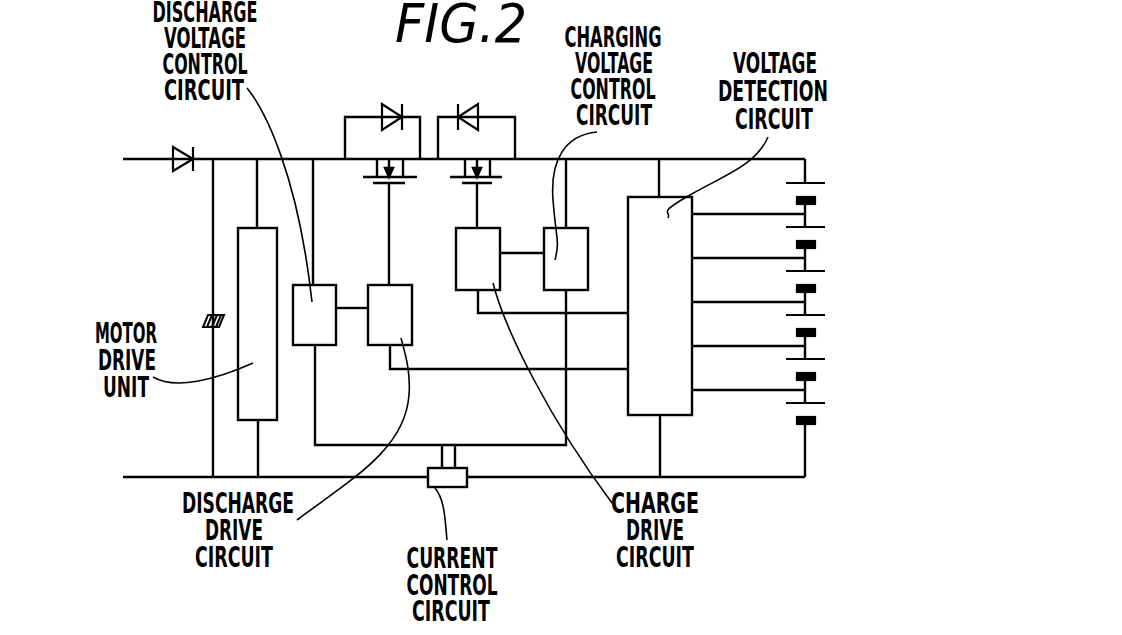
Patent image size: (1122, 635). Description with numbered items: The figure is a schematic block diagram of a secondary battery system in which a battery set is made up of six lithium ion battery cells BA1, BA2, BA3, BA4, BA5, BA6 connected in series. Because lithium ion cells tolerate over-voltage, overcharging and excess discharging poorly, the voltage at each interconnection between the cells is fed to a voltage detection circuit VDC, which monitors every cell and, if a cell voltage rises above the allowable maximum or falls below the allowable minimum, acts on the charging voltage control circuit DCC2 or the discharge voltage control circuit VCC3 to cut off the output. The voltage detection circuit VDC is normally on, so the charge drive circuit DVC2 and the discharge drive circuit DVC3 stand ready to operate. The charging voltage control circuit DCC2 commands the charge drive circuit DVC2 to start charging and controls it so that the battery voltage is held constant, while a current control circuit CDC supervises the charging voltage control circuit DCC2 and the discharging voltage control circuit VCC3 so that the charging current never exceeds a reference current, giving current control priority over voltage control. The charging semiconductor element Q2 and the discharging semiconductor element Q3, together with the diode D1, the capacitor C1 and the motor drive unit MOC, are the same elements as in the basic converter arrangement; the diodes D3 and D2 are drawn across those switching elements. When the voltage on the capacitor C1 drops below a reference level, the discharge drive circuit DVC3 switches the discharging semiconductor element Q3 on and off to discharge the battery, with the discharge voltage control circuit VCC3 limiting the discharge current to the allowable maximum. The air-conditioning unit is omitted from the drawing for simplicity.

The diode D1 is at (173, 165).
The capacitor C1 is at (202, 320).
The diode D3 is at (381, 109).
The diode D2 is at (480, 112).
The discharging semiconductor element Q3 is at (377, 182).
The charging semiconductor element Q2 is at (493, 184).
The discharge voltage control circuit VCC3 is at (308, 298).
The discharge drive circuit DVC3 is at (385, 349).
The charge drive circuit DVC2 is at (468, 292).
The charging voltage control circuit DCC2 is at (578, 224).
The voltage detection circuit VDC is at (628, 387).
The motor drive unit MOC is at (280, 413).
The current control circuit CDC is at (450, 480).
The battery cell BA1 is at (818, 199).
The battery cell BA2 is at (818, 243).
The battery cell BA3 is at (818, 287).
The battery cell BA4 is at (818, 331).
The battery cell BA5 is at (818, 375).
The battery cell BA6 is at (818, 419).